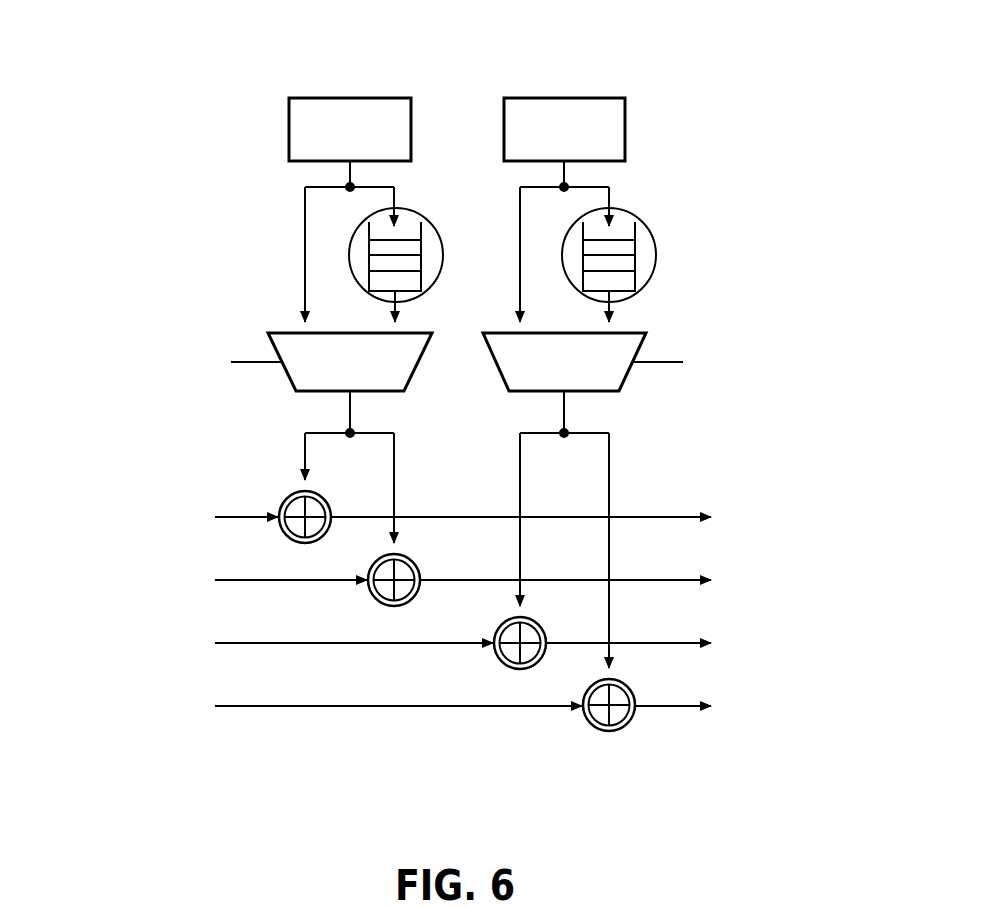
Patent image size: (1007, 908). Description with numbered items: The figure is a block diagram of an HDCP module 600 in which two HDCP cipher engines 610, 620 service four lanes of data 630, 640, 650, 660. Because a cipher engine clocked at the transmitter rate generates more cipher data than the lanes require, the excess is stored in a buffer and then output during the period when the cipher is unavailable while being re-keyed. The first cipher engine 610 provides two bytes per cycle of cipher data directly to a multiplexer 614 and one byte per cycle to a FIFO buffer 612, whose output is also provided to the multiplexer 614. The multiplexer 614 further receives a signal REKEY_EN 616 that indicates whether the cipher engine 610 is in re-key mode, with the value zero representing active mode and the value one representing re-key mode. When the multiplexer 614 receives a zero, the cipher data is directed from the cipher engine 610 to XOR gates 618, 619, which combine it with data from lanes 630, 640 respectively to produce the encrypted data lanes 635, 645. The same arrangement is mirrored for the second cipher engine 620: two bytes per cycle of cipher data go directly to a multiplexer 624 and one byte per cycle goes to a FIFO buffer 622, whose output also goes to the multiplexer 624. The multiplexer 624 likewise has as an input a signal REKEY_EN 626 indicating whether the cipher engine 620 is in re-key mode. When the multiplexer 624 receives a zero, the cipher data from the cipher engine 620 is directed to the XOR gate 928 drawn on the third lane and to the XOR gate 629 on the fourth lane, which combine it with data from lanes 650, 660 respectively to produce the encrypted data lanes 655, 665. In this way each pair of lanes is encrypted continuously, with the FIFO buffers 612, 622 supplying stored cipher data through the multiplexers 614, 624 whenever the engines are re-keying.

The HDCP module 600 is at (706, 35).
The first HDCP cipher engine 610 is at (289, 131).
The second HDCP cipher engine 620 is at (625, 129).
The FIFO buffer 612 is at (421, 250).
The FIFO buffer 622 is at (635, 250).
The multiplexer 614 is at (282, 333).
The multiplexer 624 is at (630, 333).
The REKEY_EN signal 616 is at (241, 362).
The REKEY_EN signal 626 is at (662, 362).
The XOR gate 618 is at (288, 497).
The XOR gate 619 is at (412, 562).
The XOR gate lane 2 928 is at (502, 626).
The XOR gate 629 is at (627, 688).
The first data lane 630 is at (87, 517).
The second data lane 640 is at (87, 580).
The third data lane 650 is at (87, 643).
The fourth data lane 660 is at (87, 706).
The encrypted data lane 635 is at (837, 519).
The encrypted data lane 645 is at (837, 582).
The encrypted data lane 655 is at (837, 645).
The encrypted data lane 665 is at (837, 708).